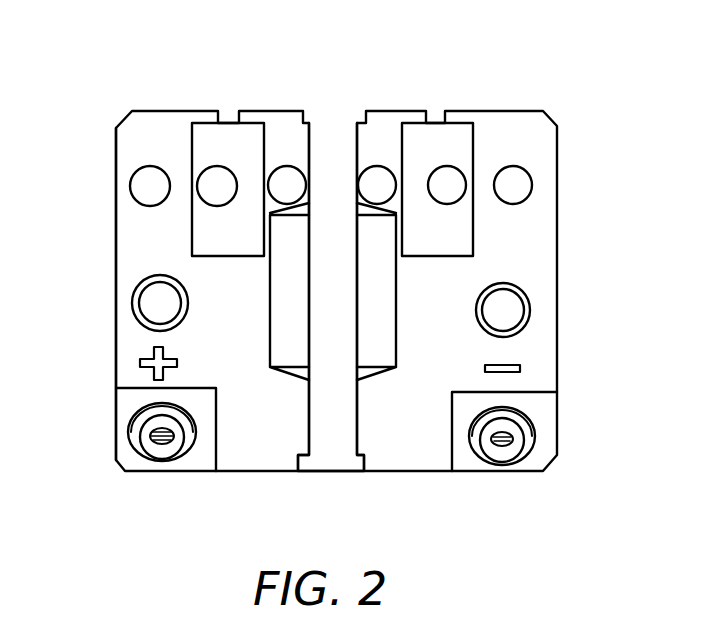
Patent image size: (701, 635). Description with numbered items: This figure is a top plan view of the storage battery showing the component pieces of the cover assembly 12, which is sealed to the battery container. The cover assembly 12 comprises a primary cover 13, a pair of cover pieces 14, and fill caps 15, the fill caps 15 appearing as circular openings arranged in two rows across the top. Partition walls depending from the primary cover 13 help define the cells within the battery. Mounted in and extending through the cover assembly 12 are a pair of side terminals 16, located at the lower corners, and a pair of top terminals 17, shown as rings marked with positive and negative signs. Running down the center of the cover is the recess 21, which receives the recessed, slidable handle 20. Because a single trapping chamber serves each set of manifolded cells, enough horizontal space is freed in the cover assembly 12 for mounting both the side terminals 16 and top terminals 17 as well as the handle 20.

The cover assembly 12 is at (580, 268).
The primary cover 13 is at (130, 237).
The cover pieces 14 is at (210, 128).
The fill caps 15 is at (137, 188).
The side terminals 16 is at (150, 435).
The top terminals 17 is at (147, 303).
The handle 20 is at (335, 120).
The recess 21 is at (383, 350).